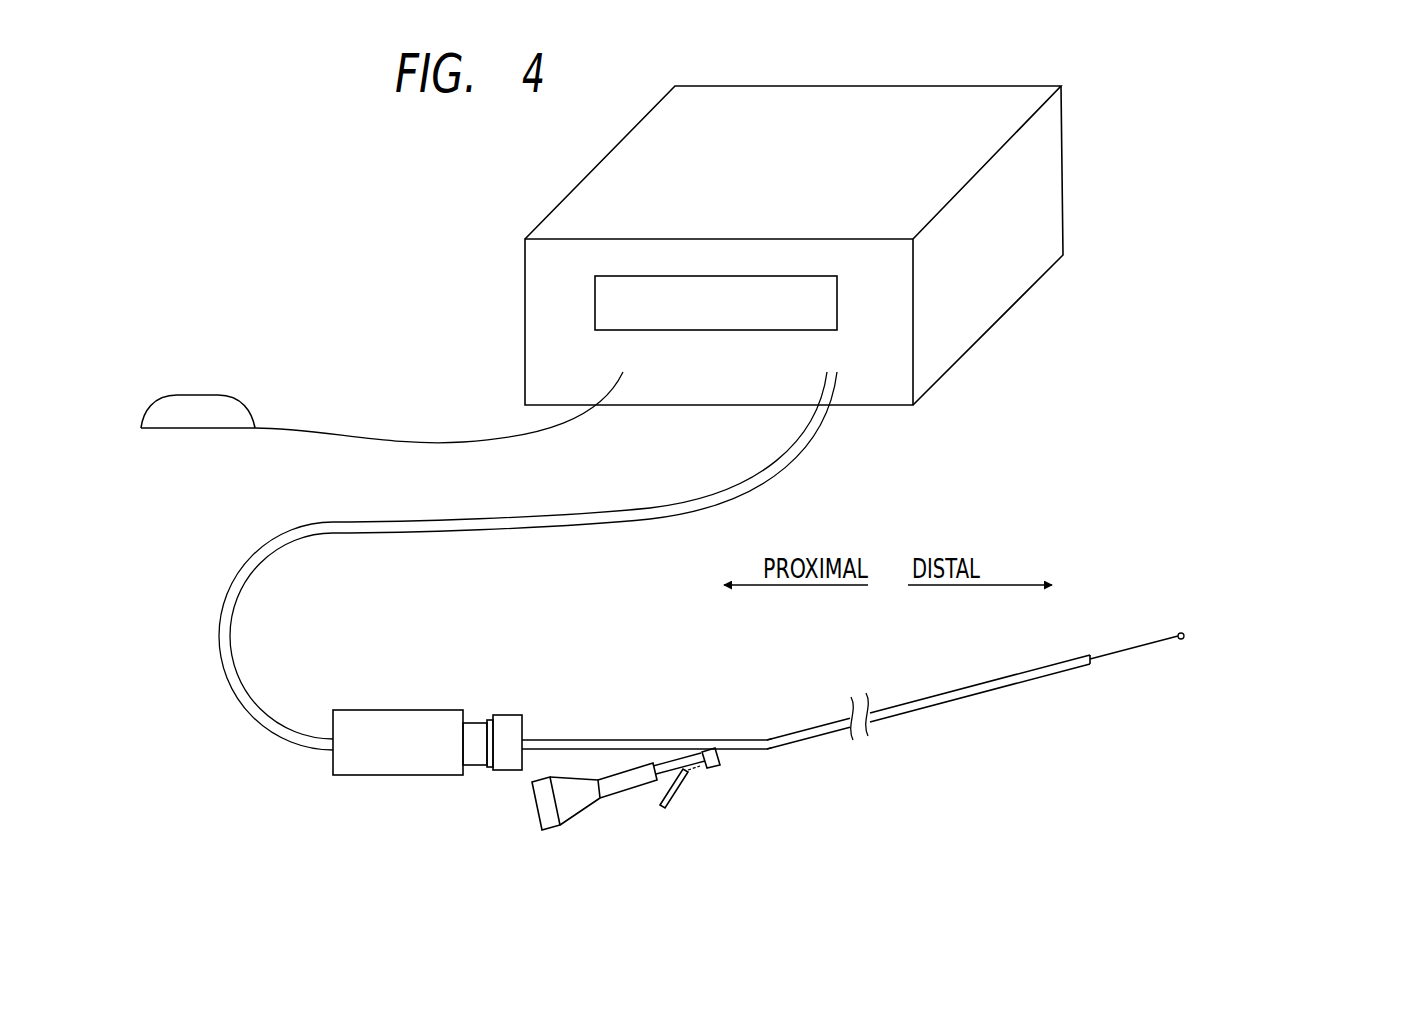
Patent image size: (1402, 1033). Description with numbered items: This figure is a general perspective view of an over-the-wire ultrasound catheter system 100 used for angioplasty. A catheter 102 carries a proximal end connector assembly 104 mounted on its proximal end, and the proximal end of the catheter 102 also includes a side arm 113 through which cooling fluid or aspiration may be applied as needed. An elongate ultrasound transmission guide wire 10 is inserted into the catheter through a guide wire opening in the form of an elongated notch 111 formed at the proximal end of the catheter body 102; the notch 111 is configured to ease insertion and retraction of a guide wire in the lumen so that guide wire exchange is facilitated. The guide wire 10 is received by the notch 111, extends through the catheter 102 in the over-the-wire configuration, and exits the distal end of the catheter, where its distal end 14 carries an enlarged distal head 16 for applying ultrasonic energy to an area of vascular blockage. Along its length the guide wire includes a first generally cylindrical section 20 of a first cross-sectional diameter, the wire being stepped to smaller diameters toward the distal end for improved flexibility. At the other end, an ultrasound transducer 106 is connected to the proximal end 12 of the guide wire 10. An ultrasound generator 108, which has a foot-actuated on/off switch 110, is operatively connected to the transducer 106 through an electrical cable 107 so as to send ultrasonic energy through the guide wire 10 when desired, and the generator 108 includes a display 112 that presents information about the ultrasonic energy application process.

The over-the-wire ultrasound catheter system 100 is at (1292, 317).
The ultrasound generator 108 is at (1066, 167).
The display 112 is at (591, 298).
The foot-actuated on/off switch 110 is at (197, 392).
The electrical cable 107 is at (777, 473).
The ultrasound transducer 106 is at (401, 708).
The ultrasound transmission guide wire 10 is at (639, 736).
The proximal end 12 is at (533, 740).
The elongated notch 111 is at (768, 740).
The first generally cylindrical section 20 is at (952, 669).
The catheter 102 is at (1044, 667).
The distal end 14 is at (1136, 648).
The distal head 16 is at (1185, 636).
The proximal end connector assembly 104 is at (580, 812).
The side arm 113 is at (678, 815).